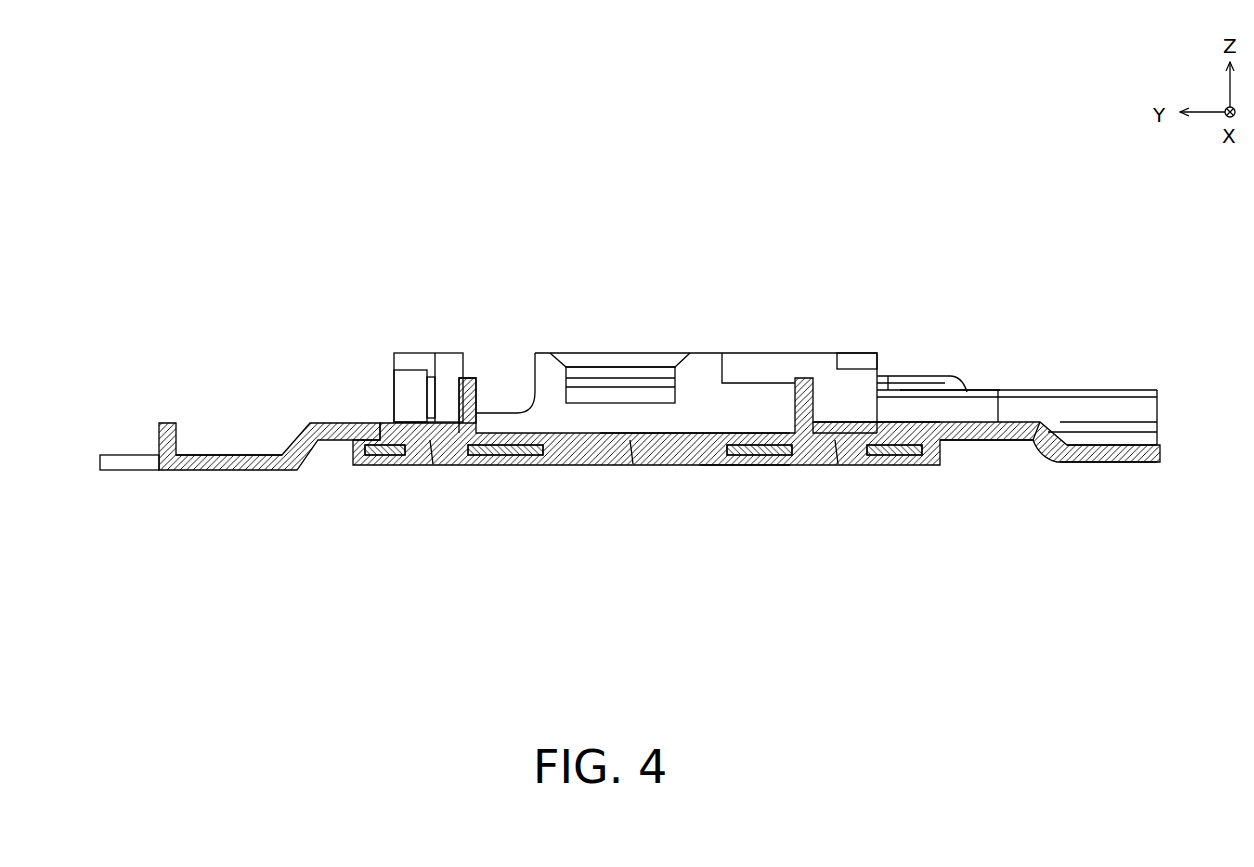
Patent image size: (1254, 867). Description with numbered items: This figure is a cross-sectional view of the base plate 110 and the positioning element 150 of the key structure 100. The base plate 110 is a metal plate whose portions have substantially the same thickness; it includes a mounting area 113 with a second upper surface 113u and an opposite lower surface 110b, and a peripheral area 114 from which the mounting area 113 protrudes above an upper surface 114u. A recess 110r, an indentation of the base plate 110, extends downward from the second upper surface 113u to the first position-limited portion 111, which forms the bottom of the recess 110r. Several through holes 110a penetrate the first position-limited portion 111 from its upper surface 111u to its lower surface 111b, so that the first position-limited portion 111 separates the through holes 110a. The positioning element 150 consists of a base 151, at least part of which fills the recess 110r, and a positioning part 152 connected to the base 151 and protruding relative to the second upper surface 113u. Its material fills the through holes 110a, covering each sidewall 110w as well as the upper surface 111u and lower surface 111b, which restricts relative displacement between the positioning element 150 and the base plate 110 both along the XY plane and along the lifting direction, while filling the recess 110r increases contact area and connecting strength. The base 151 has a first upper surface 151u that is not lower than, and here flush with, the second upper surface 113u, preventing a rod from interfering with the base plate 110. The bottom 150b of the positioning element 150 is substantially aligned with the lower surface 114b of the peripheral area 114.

The electronic device 100 is at (978, 223).
The base plate 110 is at (1160, 450).
The through hole 110a is at (433, 465).
The sidewall of the through hole 110w is at (462, 465).
The recess 110r is at (905, 431).
The lower surface 110b is at (978, 441).
The first position-limited portion 111 is at (897, 465).
The upper surface of the first position-limited portion 111u is at (745, 433).
The lower surface of the first position-limited portion 111b is at (762, 465).
The mounting area 113 is at (1018, 422).
The second upper surface 113u is at (975, 390).
The peripheral area 114 is at (1113, 455).
The upper surface of the peripheral area 114u is at (1135, 443).
The lower surface of the peripheral area 114b is at (1090, 462).
The positioning element 150 is at (288, 385).
The base 151 is at (385, 423).
The first upper surface 151u is at (890, 422).
The positioning part 152 is at (465, 398).
The bottom of the positioning element 150b is at (920, 465).